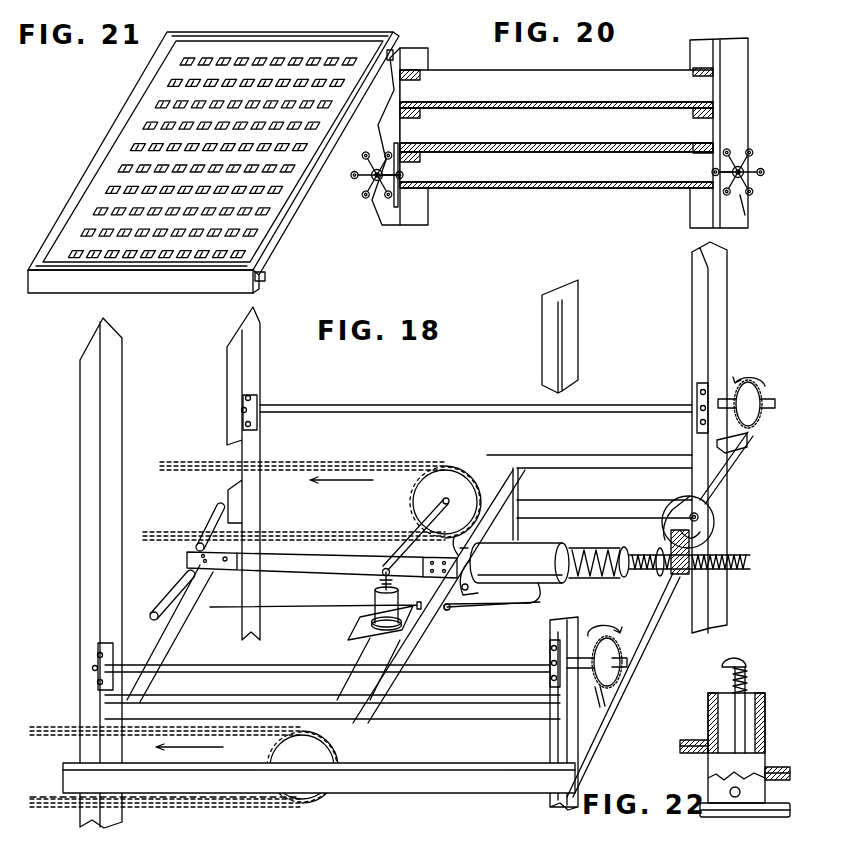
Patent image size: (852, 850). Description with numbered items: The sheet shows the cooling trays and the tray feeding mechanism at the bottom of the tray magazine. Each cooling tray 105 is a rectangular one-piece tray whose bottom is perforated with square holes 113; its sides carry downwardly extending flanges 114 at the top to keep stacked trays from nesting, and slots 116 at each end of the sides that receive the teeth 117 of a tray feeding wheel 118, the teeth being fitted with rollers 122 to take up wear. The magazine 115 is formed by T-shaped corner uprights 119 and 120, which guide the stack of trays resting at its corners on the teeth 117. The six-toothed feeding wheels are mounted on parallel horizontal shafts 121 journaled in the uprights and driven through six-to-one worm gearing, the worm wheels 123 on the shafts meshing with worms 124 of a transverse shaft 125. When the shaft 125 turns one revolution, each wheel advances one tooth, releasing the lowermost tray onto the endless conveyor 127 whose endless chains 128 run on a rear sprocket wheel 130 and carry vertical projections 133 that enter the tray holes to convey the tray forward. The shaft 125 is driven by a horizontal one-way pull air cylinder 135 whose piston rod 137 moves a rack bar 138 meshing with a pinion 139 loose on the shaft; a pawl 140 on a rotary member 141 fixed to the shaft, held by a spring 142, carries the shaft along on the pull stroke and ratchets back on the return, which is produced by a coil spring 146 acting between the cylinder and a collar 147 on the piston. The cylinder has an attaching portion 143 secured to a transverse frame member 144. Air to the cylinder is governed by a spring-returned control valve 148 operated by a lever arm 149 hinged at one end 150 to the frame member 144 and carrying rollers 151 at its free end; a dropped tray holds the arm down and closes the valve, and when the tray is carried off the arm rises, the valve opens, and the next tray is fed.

In FIG. 21, the cooling tray 105 is at (125, 153).
In FIG. 20, the cooling tray 105 is at (545, 160).
In FIG. 18, the cooling tray 105 is at (354, 841).
In FIG. 21, the square holes 113 is at (107, 191).
In FIG. 20, the square holes 113 is at (617, 104).
In FIG. 21, the downwardly extending flanges 114 is at (47, 249).
In FIG. 20, the downwardly extending flanges 114 is at (402, 124).
In FIG. 18, the magazine 115 is at (693, 315).
In FIG. 21, the slots 116 is at (263, 284).
In FIG. 20, the teeth 117 is at (752, 164).
In FIG. 20, the tray feeding wheel 118 is at (720, 207).
In FIG. 18, the tray feeding wheel 118 is at (117, 658).
In FIG. 18, the corner upright 119 is at (87, 460).
In FIG. 18, the corner upright 120 is at (567, 621).
In FIG. 18, the horizontal shaft 121 is at (433, 411).
In FIG. 20, the rollers 122 is at (403, 172).
In FIG. 18, the rollers 122 is at (262, 396).
In FIG. 18, the worm wheel 123 is at (760, 380).
In FIG. 18, the worm 124 is at (746, 427).
In FIG. 18, the transverse shaft 125 is at (742, 474).
In FIG. 18, the endless conveyor 127 is at (387, 462).
In FIG. 18, the endless chains 128 is at (152, 806).
In FIG. 18, the rear sprocket wheel 130 is at (480, 470).
In FIG. 18, the vertical projections 133 is at (200, 700).
In FIG. 18, the one-way pull type air cylinder 135 is at (505, 545).
In FIG. 18, the piston rod 137 is at (588, 538).
In FIG. 18, the rack bar 138 is at (745, 563).
In FIG. 18, the pinion or gear 139 is at (707, 531).
In FIG. 18, the pawl 140 is at (688, 498).
In FIG. 18, the rotary member 141 is at (667, 537).
In FIG. 18, the spring 142 is at (673, 517).
In FIG. 18, the attaching portion 143 is at (458, 601).
In FIG. 18, the transverse frame member 144 is at (433, 648).
In FIG. 18, the coil spring 146 is at (620, 577).
In FIG. 18, the collar or flange 147 is at (620, 542).
In FIG. 18, the control valve 148 is at (373, 602).
In FIG. 22, the control valve 148 is at (751, 720).
In FIG. 18, the lever arm 149 is at (288, 566).
In FIG. 18, the hinged end 150 is at (465, 566).
In FIG. 18, the rollers 151 is at (210, 521).